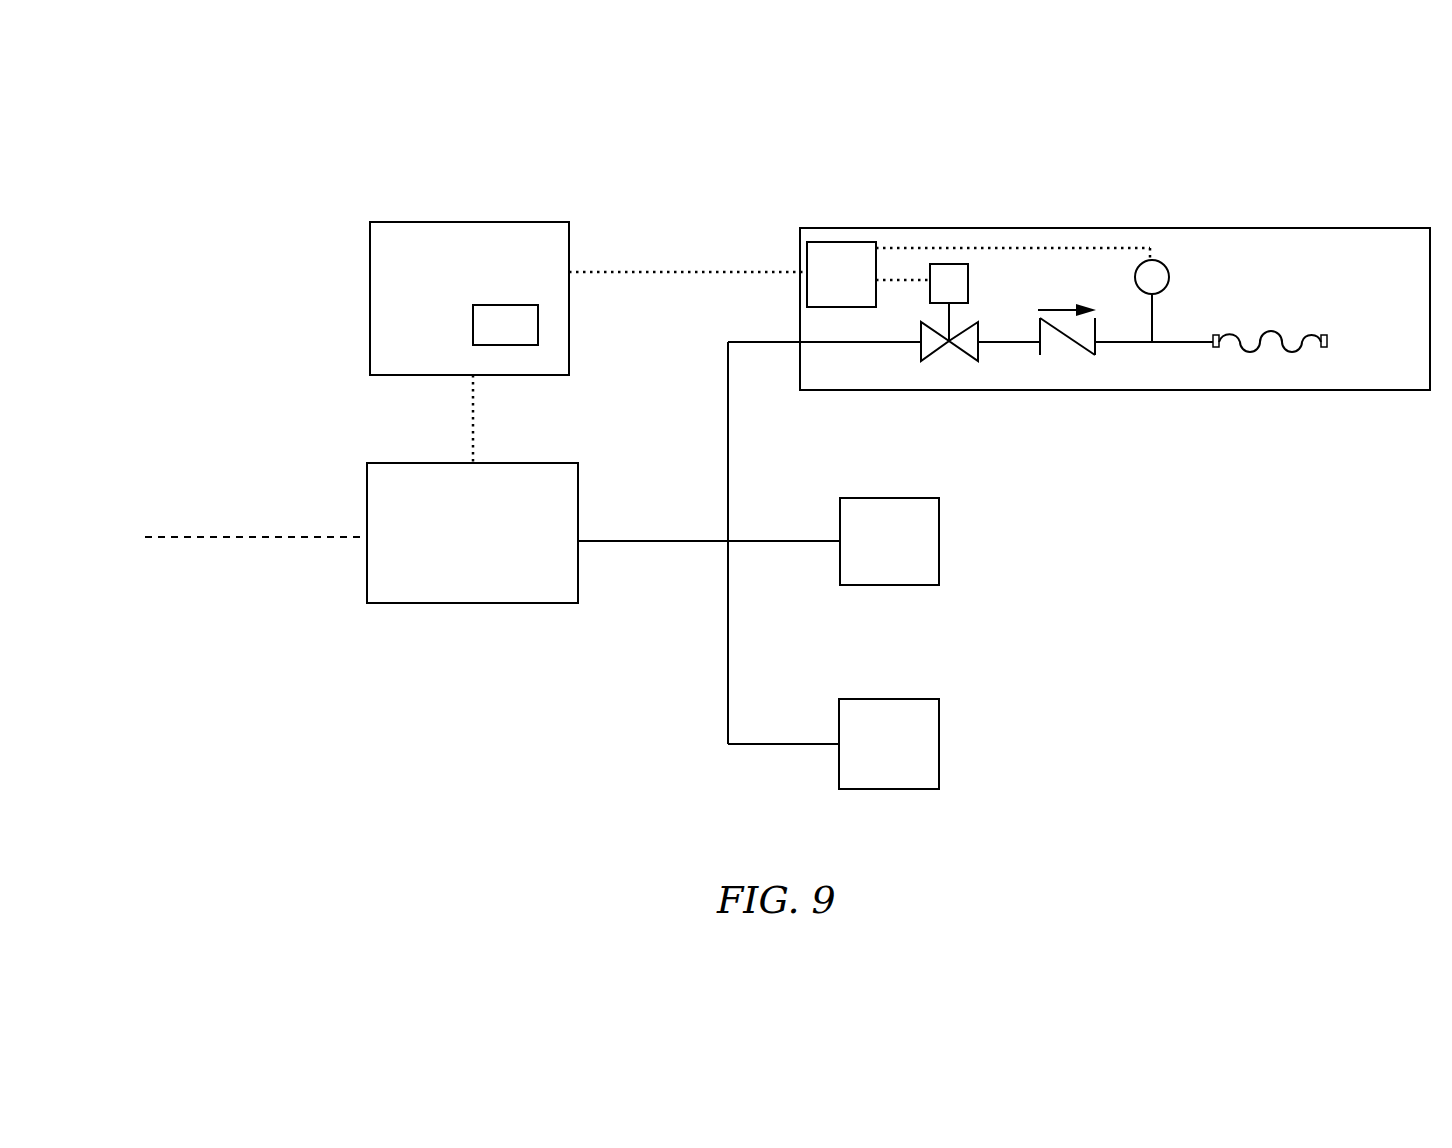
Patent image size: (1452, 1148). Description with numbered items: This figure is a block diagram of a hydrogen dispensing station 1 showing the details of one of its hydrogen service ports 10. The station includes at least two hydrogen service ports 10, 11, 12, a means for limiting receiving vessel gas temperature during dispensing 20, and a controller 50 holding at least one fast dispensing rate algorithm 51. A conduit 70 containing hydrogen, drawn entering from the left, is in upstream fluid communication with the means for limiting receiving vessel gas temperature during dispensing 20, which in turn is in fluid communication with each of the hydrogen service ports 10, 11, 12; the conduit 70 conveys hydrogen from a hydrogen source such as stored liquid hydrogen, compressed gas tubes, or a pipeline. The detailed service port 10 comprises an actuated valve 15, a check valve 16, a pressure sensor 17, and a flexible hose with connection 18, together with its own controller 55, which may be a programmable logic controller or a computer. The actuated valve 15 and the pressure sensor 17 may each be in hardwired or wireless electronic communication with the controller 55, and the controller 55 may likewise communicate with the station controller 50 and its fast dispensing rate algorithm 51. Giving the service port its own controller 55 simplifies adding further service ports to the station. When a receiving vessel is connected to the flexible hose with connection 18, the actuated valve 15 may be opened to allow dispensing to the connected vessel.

The hydrogen dispensing station 1 is at (807, 133).
The hydrogen service port 10 is at (1313, 229).
The hydrogen service port 11 is at (875, 555).
The hydrogen service port 12 is at (875, 759).
The actuated valve 15 is at (960, 358).
The check valve 16 is at (1080, 353).
The pressure sensor 17 is at (1168, 264).
The flexible hose with connection 18 is at (1240, 349).
The means for limiting receiving vessel gas temperature during dispensing 20 is at (452, 547).
The controller 50 is at (395, 278).
The fast dispensing rate algorithm 51 is at (490, 341).
The controller 55 is at (826, 286).
The conduit 70 is at (279, 536).